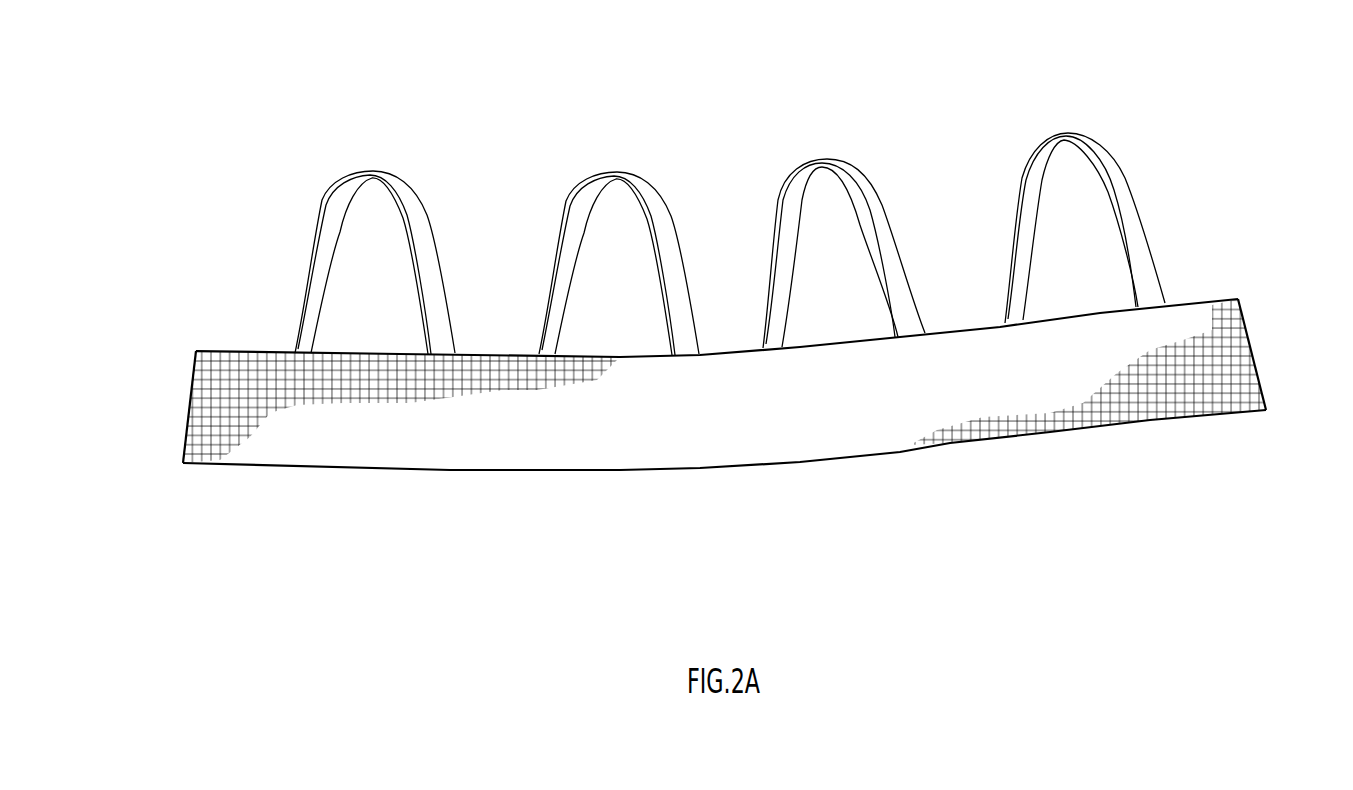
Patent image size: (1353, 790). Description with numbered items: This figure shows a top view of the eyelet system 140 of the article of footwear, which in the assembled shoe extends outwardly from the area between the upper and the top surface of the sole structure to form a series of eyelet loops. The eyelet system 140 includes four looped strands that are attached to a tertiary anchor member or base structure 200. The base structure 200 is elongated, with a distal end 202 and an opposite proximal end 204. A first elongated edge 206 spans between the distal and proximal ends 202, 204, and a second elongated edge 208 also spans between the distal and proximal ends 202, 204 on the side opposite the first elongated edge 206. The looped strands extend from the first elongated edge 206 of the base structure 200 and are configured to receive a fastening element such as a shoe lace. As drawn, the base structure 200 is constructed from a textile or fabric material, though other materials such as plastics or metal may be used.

The eyelet system 140 is at (734, 305).
The base structure 200 is at (720, 412).
The distal end 202 is at (1258, 362).
The proximal end 204 is at (190, 392).
The first elongated edge 206 is at (736, 352).
The second elongated edge 208 is at (865, 458).